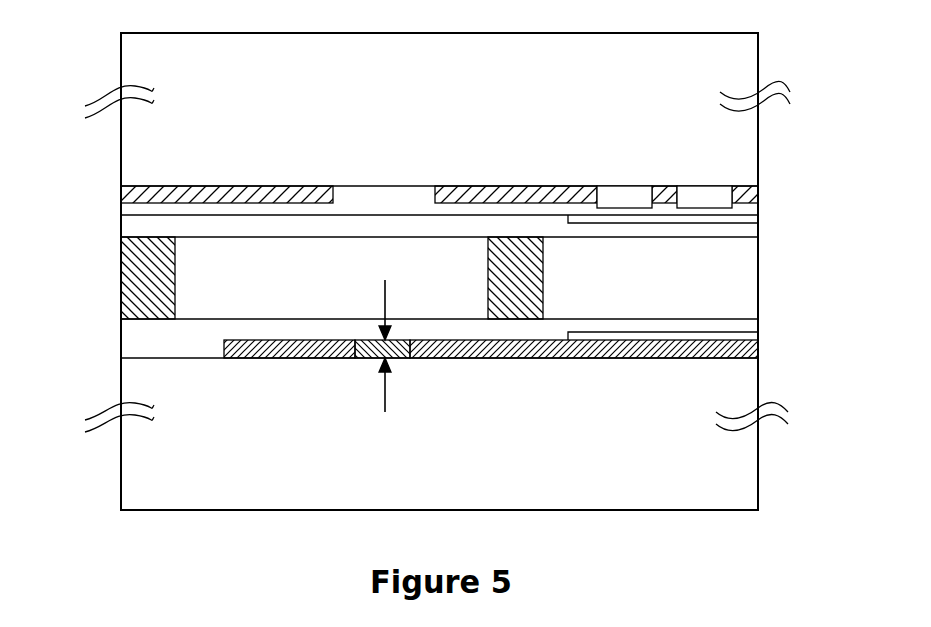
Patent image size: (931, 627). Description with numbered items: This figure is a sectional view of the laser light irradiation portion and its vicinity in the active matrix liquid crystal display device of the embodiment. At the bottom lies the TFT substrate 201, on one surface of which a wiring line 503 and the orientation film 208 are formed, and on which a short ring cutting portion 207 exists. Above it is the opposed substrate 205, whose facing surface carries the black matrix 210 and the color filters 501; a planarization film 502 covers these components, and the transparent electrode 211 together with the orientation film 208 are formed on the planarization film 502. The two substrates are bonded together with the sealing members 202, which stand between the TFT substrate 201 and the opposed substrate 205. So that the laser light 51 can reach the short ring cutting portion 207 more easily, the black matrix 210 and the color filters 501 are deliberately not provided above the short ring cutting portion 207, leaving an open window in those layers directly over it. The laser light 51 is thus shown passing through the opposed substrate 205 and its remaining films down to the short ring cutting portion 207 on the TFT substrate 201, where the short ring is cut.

The laser light 51 is at (386, 350).
The TFT substrate 201 is at (465, 451).
The sealing members 202 is at (152, 287).
The opposed substrate 205 is at (469, 86).
The short ring cutting portion 207 is at (380, 358).
The orientation film 208 is at (132, 228).
The black matrix 210 is at (282, 193).
The transparent electrode 211 is at (758, 328).
The color filters 501 is at (715, 192).
The planarization film 502 is at (370, 192).
The wiring line 503 is at (758, 345).